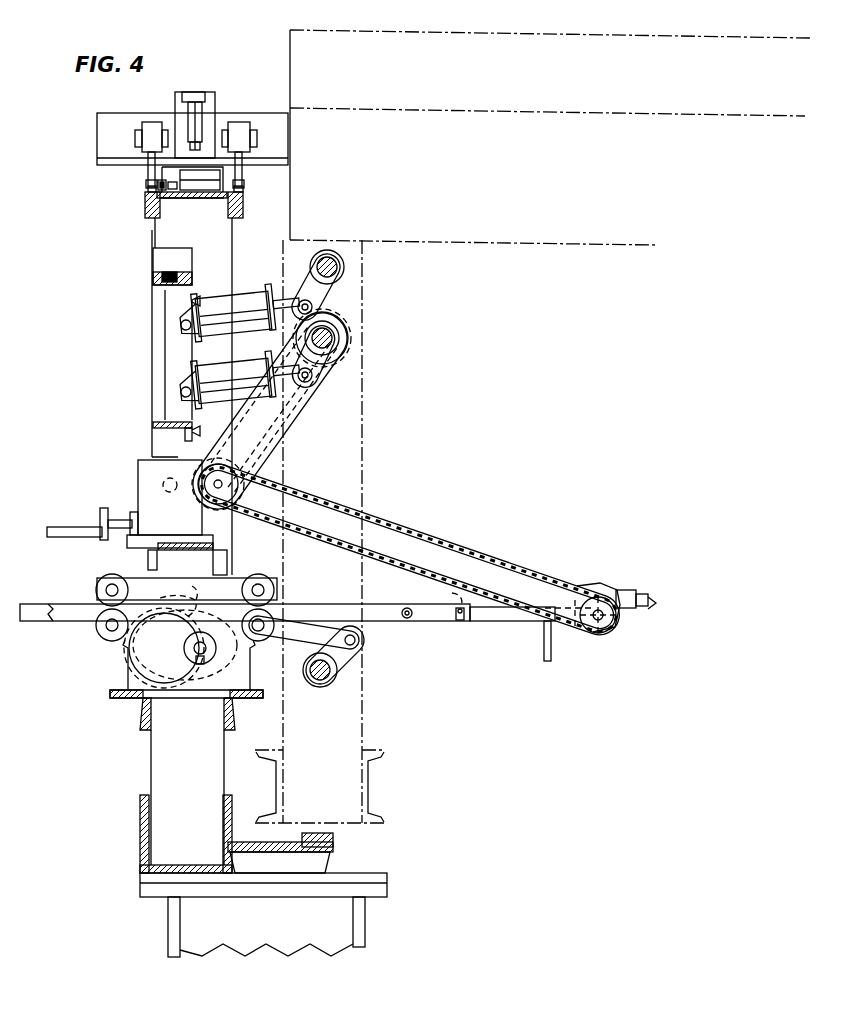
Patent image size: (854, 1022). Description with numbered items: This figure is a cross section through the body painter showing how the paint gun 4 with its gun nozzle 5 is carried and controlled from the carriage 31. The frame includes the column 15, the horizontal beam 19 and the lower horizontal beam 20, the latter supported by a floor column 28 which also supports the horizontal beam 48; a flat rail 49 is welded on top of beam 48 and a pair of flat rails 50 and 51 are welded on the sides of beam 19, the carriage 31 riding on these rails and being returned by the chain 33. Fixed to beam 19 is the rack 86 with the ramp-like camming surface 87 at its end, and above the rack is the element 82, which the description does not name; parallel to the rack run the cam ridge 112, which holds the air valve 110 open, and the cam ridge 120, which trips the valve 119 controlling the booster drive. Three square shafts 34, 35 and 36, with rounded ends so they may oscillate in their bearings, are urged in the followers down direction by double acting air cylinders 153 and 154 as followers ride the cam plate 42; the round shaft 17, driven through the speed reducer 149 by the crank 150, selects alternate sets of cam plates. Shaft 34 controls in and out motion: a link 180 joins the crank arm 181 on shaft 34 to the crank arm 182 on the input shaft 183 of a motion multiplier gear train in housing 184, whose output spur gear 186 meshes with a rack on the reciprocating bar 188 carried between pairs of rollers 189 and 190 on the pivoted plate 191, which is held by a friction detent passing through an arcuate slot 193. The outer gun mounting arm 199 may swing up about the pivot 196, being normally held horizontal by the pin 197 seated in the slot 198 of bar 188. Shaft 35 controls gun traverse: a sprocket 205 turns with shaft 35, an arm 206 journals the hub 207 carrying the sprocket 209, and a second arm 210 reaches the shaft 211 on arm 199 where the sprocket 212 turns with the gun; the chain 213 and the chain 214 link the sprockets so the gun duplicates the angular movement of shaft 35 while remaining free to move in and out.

The paint gun 4 is at (604, 590).
The gun nozzle 5 is at (652, 600).
The column 15 is at (167, 445).
The round shaft 17 is at (163, 485).
The horizontal beam 19 is at (224, 206).
The lower horizontal beam 20 is at (150, 826).
The floor column 28 is at (366, 920).
The carriage 31 is at (564, 253).
The chain 33 is at (160, 185).
The square shaft 34 is at (324, 687).
The square shaft 35 is at (334, 337).
The square shaft 36 is at (336, 268).
The cam plate 42 is at (376, 750).
The horizontal beam 48 is at (334, 862).
The flat rail 49 is at (334, 840).
The flat rail 50 is at (245, 210).
The flat rail 51 is at (146, 205).
The actuator 82 is at (216, 103).
The rack 86 is at (186, 200).
The camming surface 87 is at (222, 178).
The air valve 110 is at (150, 137).
The cam ridge 112 is at (158, 185).
The valve 119 is at (245, 137).
The cam ridge 120 is at (244, 190).
The speed reducer 149 is at (177, 517).
The crank 150 is at (80, 520).
The double acting air cylinder 153 is at (243, 368).
The double acting air cylinder 154 is at (238, 300).
The link 180 is at (310, 648).
The crank arm 181 is at (356, 652).
The crank arm 182 is at (208, 655).
The input shaft 183 is at (205, 665).
The housing 184 is at (220, 697).
The spur gear 186 is at (126, 656).
The reciprocating bar 188 is at (340, 596).
The rollers 189 is at (115, 578).
The rollers 190 is at (262, 578).
The plate 191 is at (97, 584).
The arcuate slot 193 is at (200, 570).
The pivot 196 is at (408, 619).
The pin 197 is at (460, 621).
The slot 198 is at (441, 594).
The outer gun mounting arm 199 is at (512, 621).
The sprocket 205 is at (352, 348).
The arm 206 is at (306, 420).
The hub 207 is at (240, 462).
The sprocket 209 is at (245, 481).
The second arm 210 is at (492, 573).
The shaft 211 is at (617, 621).
The sprocket 212 is at (590, 626).
The chain 213 is at (294, 440).
The chain 214 is at (412, 540).